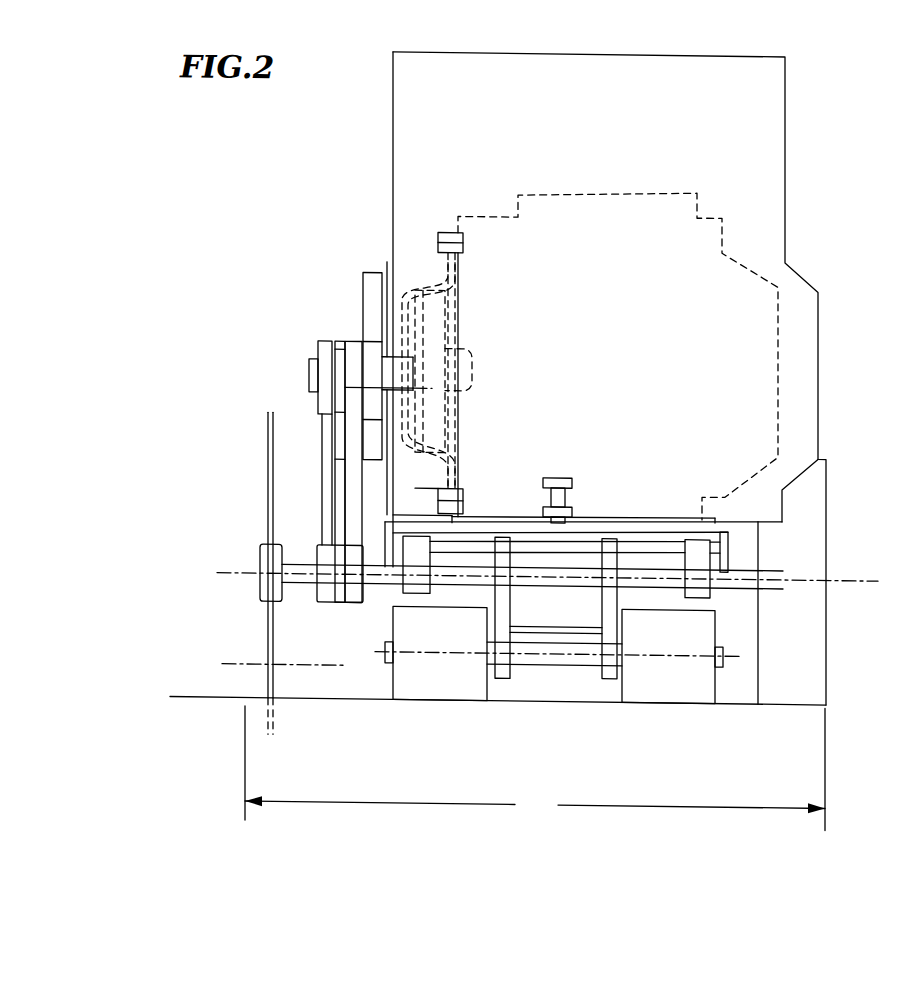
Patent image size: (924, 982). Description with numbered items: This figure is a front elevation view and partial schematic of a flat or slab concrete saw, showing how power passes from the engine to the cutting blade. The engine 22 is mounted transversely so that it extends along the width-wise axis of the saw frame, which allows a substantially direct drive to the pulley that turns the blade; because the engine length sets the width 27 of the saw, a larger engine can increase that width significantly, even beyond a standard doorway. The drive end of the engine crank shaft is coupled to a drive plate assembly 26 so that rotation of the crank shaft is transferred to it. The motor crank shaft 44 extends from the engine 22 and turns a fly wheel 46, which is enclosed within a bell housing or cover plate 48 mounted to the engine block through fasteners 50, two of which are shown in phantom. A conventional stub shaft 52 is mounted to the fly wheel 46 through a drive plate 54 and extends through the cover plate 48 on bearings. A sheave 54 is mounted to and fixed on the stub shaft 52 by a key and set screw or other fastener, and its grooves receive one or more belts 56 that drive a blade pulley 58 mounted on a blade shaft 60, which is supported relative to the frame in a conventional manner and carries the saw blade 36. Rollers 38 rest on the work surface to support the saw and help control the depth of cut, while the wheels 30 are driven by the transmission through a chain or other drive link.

The engine 22 is at (598, 192).
The drive plate assembly 26 is at (449, 272).
The width 27 is at (535, 766).
The wheels 30 is at (797, 652).
The saw blade 36 is at (268, 640).
The rollers 38 is at (442, 686).
The motor crank shaft 44 is at (472, 366).
The fly wheel 46 is at (435, 318).
The cover plate 48 is at (430, 272).
The fasteners 50 is at (440, 233).
The stub shaft 52 is at (372, 273).
The sheave 54 is at (338, 343).
The belts 56 is at (330, 495).
The blade pulley 58 is at (342, 585).
The blade shaft 60 is at (663, 577).